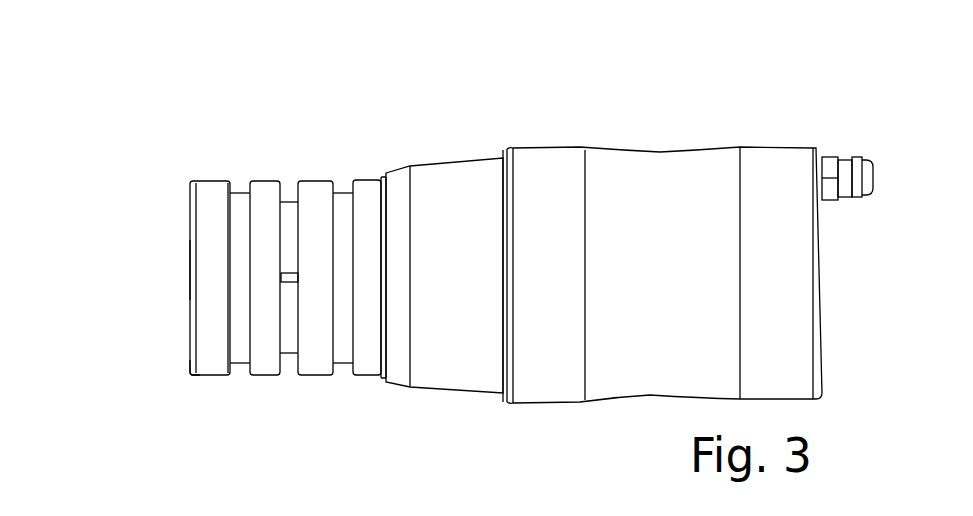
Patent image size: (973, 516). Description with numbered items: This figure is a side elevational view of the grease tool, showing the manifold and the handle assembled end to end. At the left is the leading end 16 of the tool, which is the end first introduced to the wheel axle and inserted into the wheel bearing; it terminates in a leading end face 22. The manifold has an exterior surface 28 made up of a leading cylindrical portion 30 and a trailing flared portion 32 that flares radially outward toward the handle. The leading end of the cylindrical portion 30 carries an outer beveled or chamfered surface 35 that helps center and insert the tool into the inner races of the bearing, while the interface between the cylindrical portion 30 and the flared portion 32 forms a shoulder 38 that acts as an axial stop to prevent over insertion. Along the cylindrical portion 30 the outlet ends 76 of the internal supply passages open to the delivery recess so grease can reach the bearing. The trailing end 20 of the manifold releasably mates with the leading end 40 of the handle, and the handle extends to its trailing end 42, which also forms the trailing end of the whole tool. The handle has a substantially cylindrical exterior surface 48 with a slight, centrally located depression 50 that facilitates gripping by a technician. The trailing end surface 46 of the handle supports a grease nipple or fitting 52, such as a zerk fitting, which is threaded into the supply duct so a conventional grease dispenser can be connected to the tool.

The trailing end 20 is at (852, 282).
The leading end 16 is at (213, 398).
The leading end face 22 is at (190, 267).
The exterior surface 28 is at (210, 180).
The cylindrical portion 30 is at (297, 126).
The flared portion 32 is at (438, 122).
The outer beveled or chamfered surface 35 is at (190, 362).
The shoulder 38 is at (386, 176).
The leading end 40 is at (526, 428).
The trailing end 42 is at (783, 116).
The trailing end surface 46 is at (823, 358).
The exterior surface 48 is at (550, 148).
The depression 50 is at (660, 152).
The grease nipple or fitting 52 is at (828, 157).
The outlet ends 76 is at (290, 282).